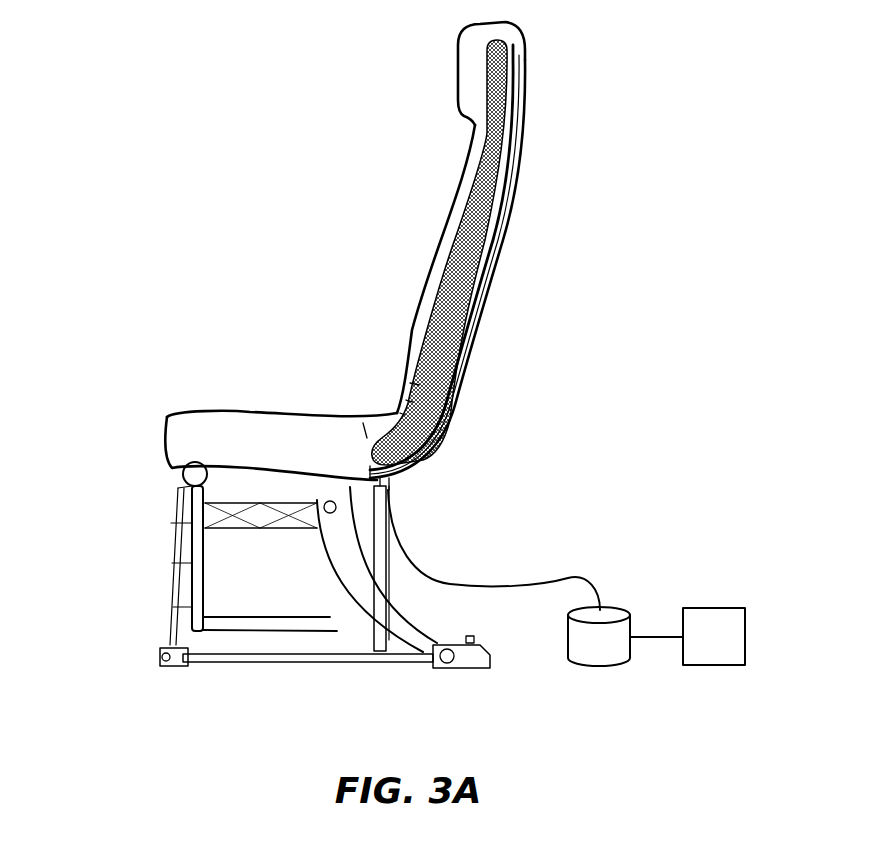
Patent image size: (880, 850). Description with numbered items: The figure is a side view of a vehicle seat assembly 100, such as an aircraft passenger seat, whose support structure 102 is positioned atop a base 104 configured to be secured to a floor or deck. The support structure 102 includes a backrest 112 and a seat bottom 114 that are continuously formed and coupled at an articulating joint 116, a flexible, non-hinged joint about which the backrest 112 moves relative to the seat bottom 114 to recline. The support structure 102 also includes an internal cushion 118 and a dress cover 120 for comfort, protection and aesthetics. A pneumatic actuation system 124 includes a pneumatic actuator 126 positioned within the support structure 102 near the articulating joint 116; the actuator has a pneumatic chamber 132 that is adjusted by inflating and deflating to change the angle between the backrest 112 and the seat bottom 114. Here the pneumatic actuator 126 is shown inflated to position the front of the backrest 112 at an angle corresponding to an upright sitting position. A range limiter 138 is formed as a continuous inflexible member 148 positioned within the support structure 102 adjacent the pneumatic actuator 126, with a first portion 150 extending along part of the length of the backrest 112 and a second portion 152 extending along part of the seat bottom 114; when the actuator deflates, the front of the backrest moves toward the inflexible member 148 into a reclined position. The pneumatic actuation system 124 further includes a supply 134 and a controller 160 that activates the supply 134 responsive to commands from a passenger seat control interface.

The vehicle seat assembly 100 is at (230, 200).
The support structure 102 is at (399, 290).
The base 104 is at (149, 556).
The backrest 112 is at (443, 232).
The seat bottom 114 is at (247, 412).
The articulating joint 116 is at (388, 401).
The internal cushion 118 is at (180, 432).
The dress cover 120 is at (512, 213).
The pneumatic actuation system 124 is at (654, 573).
The pneumatic actuator 126 is at (447, 345).
The pneumatic chamber 132 is at (478, 284).
The supply 134 is at (582, 656).
The range limiter 138 is at (463, 415).
The inflexible member 148 is at (494, 253).
The first portion 150 is at (535, 58).
The second portion 152 is at (403, 484).
The controller 160 is at (697, 646).